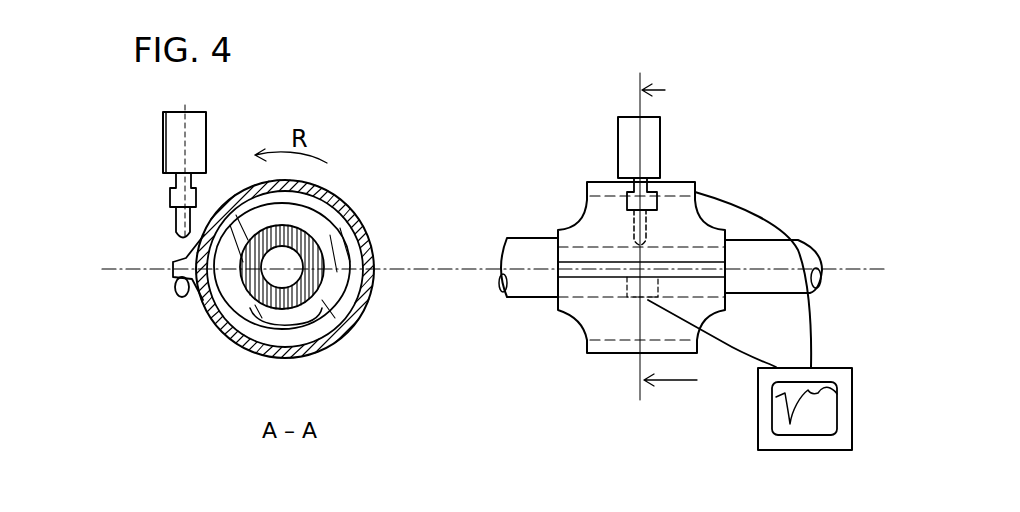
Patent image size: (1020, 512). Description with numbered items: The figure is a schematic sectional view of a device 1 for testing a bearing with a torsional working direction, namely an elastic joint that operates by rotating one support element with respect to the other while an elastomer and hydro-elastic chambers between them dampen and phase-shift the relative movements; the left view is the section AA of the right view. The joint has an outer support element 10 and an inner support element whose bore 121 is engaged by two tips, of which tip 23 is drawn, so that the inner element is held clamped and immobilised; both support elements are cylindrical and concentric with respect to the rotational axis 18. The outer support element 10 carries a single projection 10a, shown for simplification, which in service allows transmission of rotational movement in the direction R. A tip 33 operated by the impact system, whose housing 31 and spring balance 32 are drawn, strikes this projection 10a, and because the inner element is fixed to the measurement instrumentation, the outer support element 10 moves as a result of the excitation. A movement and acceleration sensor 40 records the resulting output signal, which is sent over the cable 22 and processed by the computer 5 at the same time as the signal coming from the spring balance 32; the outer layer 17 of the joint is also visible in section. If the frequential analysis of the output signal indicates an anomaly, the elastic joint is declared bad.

The measuring apparatus 1 is at (451, 171).
The sensor housing 31 is at (150, 147).
The spring balance 32 is at (162, 208).
The tip 33 is at (166, 241).
The computer 5 is at (750, 441).
The outer support element 10 is at (577, 348).
The projection 10a is at (168, 280).
The bore 121 is at (280, 277).
The roller cover layer 17 is at (228, 338).
The rotational axis 18 is at (840, 263).
The signal cable 22 is at (790, 229).
The tip 23 is at (513, 228).
The movement and acceleration sensor 40 is at (177, 312).